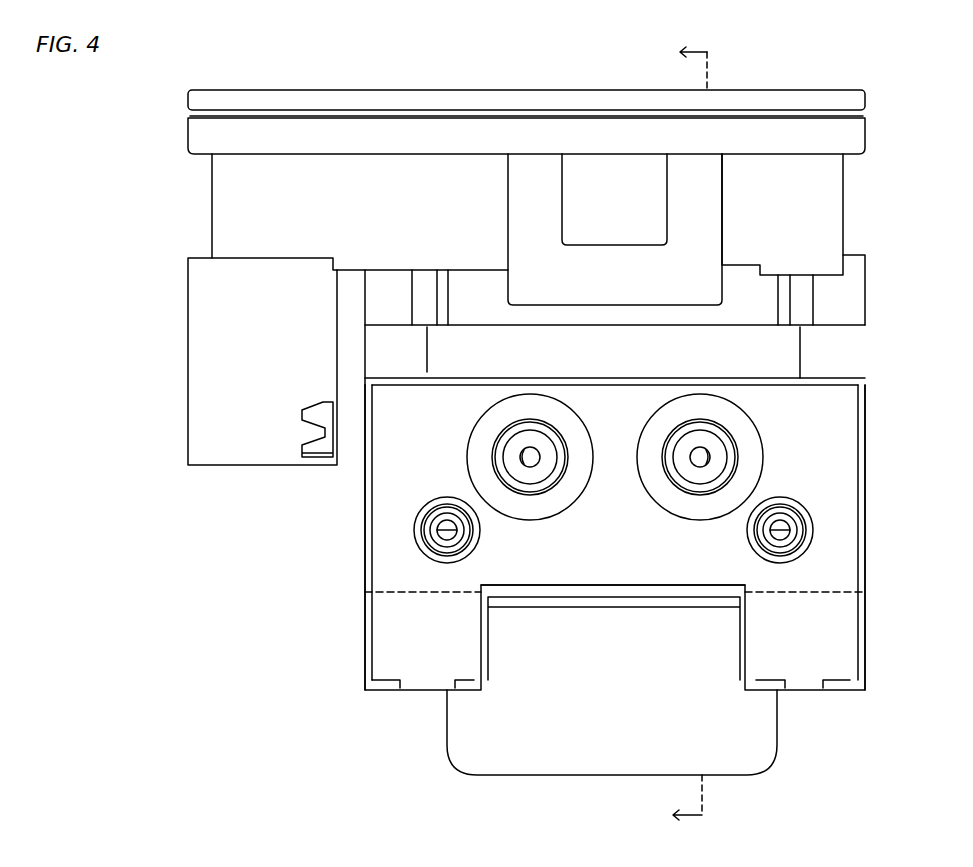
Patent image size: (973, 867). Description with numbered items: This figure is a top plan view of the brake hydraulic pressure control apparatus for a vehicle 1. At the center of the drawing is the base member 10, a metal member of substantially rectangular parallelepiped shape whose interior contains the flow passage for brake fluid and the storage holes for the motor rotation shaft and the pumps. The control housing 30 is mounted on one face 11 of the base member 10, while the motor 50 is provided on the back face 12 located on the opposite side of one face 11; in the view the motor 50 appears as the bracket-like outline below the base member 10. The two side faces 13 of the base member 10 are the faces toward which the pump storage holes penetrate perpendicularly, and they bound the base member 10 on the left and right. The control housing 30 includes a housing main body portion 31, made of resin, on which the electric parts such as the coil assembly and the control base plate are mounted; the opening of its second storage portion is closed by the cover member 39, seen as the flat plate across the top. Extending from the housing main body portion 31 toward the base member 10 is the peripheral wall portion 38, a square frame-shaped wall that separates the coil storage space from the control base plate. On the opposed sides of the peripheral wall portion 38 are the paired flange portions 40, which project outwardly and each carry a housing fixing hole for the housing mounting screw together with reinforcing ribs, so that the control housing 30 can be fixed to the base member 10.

The brake hydraulic pressure control apparatus for a vehicle 1 is at (115, 160).
The base member 10 is at (805, 468).
The one face 11 is at (810, 368).
The back face 12 is at (702, 595).
The side faces 13 is at (868, 513).
The control housing 30 is at (427, 208).
The housing main body portion 31 is at (823, 208).
The peripheral wall portion 38 is at (632, 350).
The cover member 39 is at (853, 108).
The flange portions 40 is at (845, 353).
The motor 50 is at (615, 742).